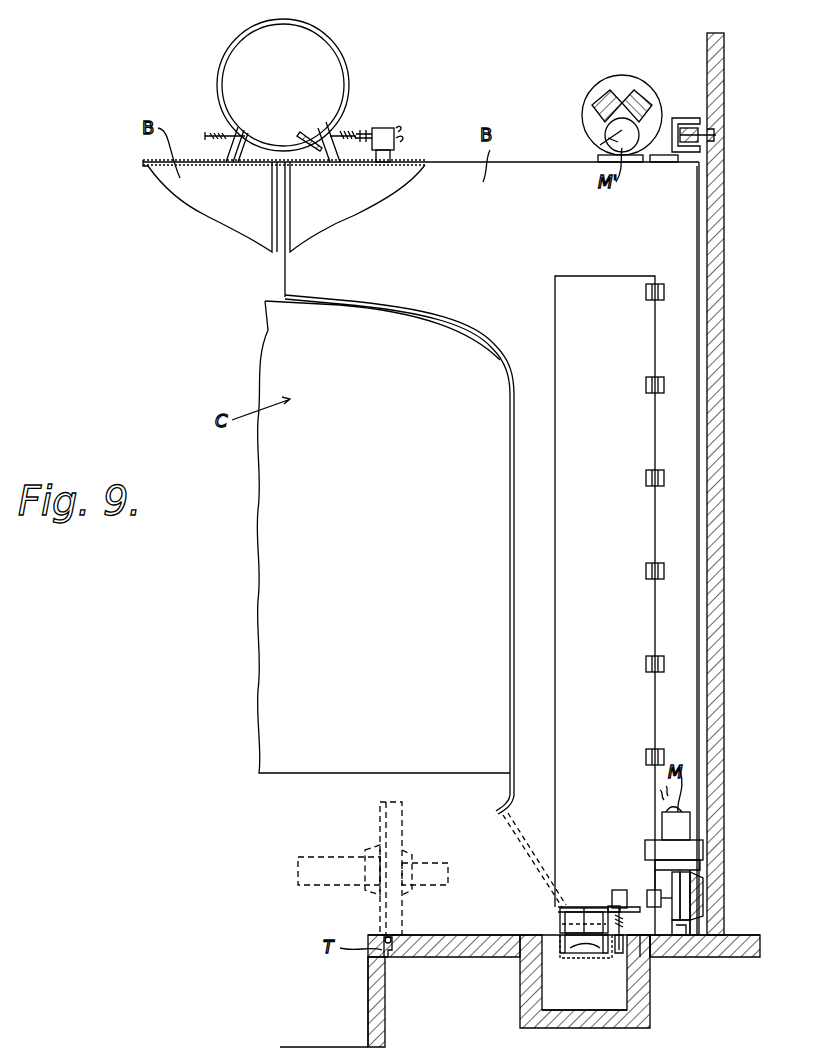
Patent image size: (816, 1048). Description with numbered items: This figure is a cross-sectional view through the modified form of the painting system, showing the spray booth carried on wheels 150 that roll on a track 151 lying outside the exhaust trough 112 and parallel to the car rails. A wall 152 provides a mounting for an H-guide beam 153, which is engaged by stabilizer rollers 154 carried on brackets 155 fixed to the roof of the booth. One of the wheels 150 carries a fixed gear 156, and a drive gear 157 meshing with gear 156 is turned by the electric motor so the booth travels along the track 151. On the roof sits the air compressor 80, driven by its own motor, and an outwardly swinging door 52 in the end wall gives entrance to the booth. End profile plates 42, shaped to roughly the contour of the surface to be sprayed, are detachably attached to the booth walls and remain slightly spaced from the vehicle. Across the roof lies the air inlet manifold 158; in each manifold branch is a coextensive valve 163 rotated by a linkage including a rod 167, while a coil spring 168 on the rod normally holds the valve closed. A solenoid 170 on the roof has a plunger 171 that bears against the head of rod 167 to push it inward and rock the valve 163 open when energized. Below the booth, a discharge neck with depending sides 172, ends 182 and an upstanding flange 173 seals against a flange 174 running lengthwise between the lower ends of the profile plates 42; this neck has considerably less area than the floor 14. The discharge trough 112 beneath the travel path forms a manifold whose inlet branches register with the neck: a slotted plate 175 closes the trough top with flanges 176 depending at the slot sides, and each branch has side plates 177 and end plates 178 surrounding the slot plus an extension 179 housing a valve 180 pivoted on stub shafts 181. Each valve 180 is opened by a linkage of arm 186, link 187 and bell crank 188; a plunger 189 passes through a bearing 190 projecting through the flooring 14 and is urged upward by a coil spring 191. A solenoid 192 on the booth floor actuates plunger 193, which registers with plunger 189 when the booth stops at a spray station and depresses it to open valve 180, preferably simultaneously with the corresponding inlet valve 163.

The manifold 158 is at (317, 55).
The valve 163 is at (300, 140).
The rod 167 is at (320, 136).
The coil spring 168 is at (352, 132).
The plunger 171 is at (378, 128).
The solenoid 170 is at (392, 132).
The air compressor 80 is at (620, 90).
The stabilizer rollers 154 is at (688, 118).
The H-guide beam 153 is at (712, 134).
The brackets 155 is at (668, 163).
The door 52 is at (556, 320).
The end profile plates 42 is at (432, 318).
The wall 152 is at (722, 772).
The floor 14 is at (642, 880).
The flange 174 is at (540, 900).
The solenoid 192 is at (618, 890).
The plunger 193 is at (622, 905).
The upstanding flange 173 is at (560, 878).
The ends 182 is at (614, 906).
The stub shafts 181 is at (588, 930).
The end plates 178 is at (574, 912).
The depending sides 172 is at (556, 920).
The side plates 177 is at (558, 926).
The wheels 150 is at (672, 912).
The drive gear 157 is at (704, 877).
The gear 156 is at (706, 896).
The track 151 is at (700, 922).
The slotted plate 175 is at (522, 962).
The flanges 176 is at (530, 972).
The valve 180 is at (568, 953).
The link 187 is at (592, 952).
The bell crank 188 is at (608, 955).
The arm 186 is at (557, 968).
The exhaust trough 112 is at (600, 1004).
The extension 179 is at (614, 958).
The bearing 190 is at (642, 946).
The plunger 189 is at (652, 960).
The coil spring 191 is at (652, 940).